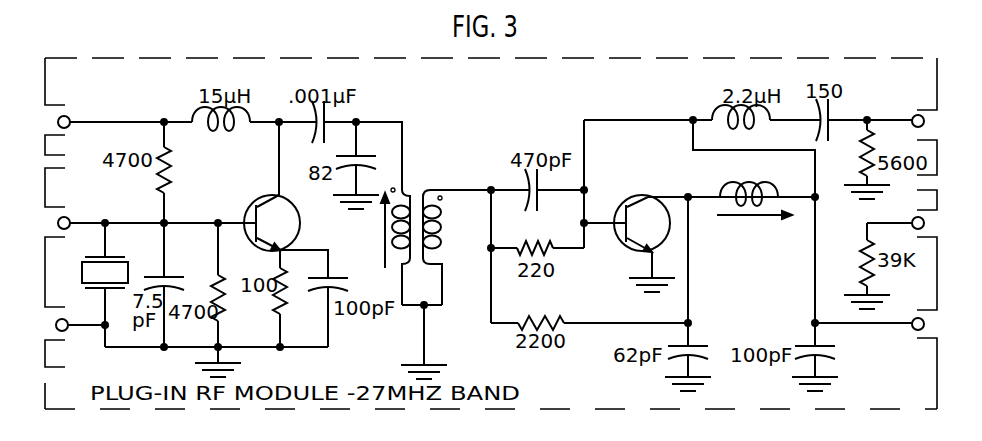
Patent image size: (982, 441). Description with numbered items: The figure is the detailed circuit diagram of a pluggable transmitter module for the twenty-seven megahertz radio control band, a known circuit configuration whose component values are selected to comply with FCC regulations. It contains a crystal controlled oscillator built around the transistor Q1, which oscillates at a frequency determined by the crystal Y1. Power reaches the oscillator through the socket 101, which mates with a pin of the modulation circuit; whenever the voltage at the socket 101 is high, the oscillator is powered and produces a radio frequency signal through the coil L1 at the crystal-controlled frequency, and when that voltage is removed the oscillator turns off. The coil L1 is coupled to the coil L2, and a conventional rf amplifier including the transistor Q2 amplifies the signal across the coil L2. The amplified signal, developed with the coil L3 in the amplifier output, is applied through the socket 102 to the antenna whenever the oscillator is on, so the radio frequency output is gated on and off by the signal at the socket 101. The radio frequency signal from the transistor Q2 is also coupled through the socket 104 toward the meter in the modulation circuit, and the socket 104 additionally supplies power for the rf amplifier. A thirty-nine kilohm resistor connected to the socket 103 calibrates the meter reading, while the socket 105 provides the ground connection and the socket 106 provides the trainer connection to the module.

The socket 101 is at (66, 116).
The socket 102 is at (914, 115).
The socket 103 is at (914, 217).
The socket 104 is at (913, 330).
The socket 105 is at (67, 331).
The socket 106 is at (65, 217).
The transistor Q1 is at (267, 200).
The transistor Q2 is at (627, 200).
The coil L1 is at (386, 246).
The coil L2 is at (457, 247).
The coil L3 is at (754, 191).
The crystal Y1 is at (110, 262).